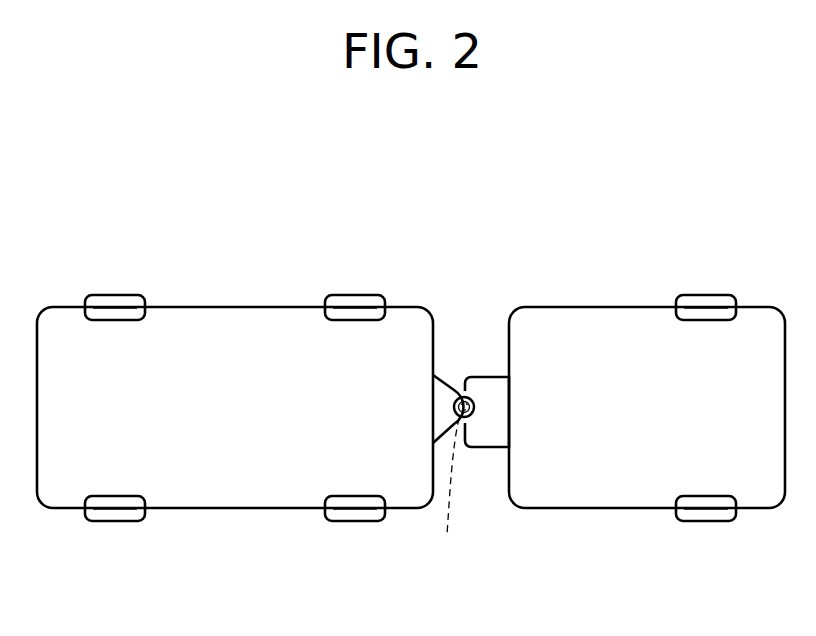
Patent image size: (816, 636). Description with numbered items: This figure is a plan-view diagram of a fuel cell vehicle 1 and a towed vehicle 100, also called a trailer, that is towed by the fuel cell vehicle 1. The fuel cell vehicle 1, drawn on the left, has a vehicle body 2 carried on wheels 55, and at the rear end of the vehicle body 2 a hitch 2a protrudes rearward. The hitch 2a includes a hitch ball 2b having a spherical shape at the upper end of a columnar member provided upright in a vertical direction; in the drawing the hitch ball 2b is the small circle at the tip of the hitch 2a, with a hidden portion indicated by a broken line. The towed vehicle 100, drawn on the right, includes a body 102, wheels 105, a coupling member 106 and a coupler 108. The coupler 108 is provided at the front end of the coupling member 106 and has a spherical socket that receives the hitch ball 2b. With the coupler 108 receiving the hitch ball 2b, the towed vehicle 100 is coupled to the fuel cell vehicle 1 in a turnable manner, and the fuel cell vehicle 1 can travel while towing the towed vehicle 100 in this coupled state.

The fuel cell vehicle 1 is at (250, 412).
The vehicle body 2 is at (243, 510).
The hitch 2a is at (458, 396).
The hitch ball 2b is at (446, 494).
The wheels 55 is at (361, 295).
The towed vehicle 100 is at (625, 413).
The body 102 is at (625, 510).
The wheels 105 is at (696, 522).
The coupling member 106 is at (497, 447).
The coupler 108 is at (467, 397).